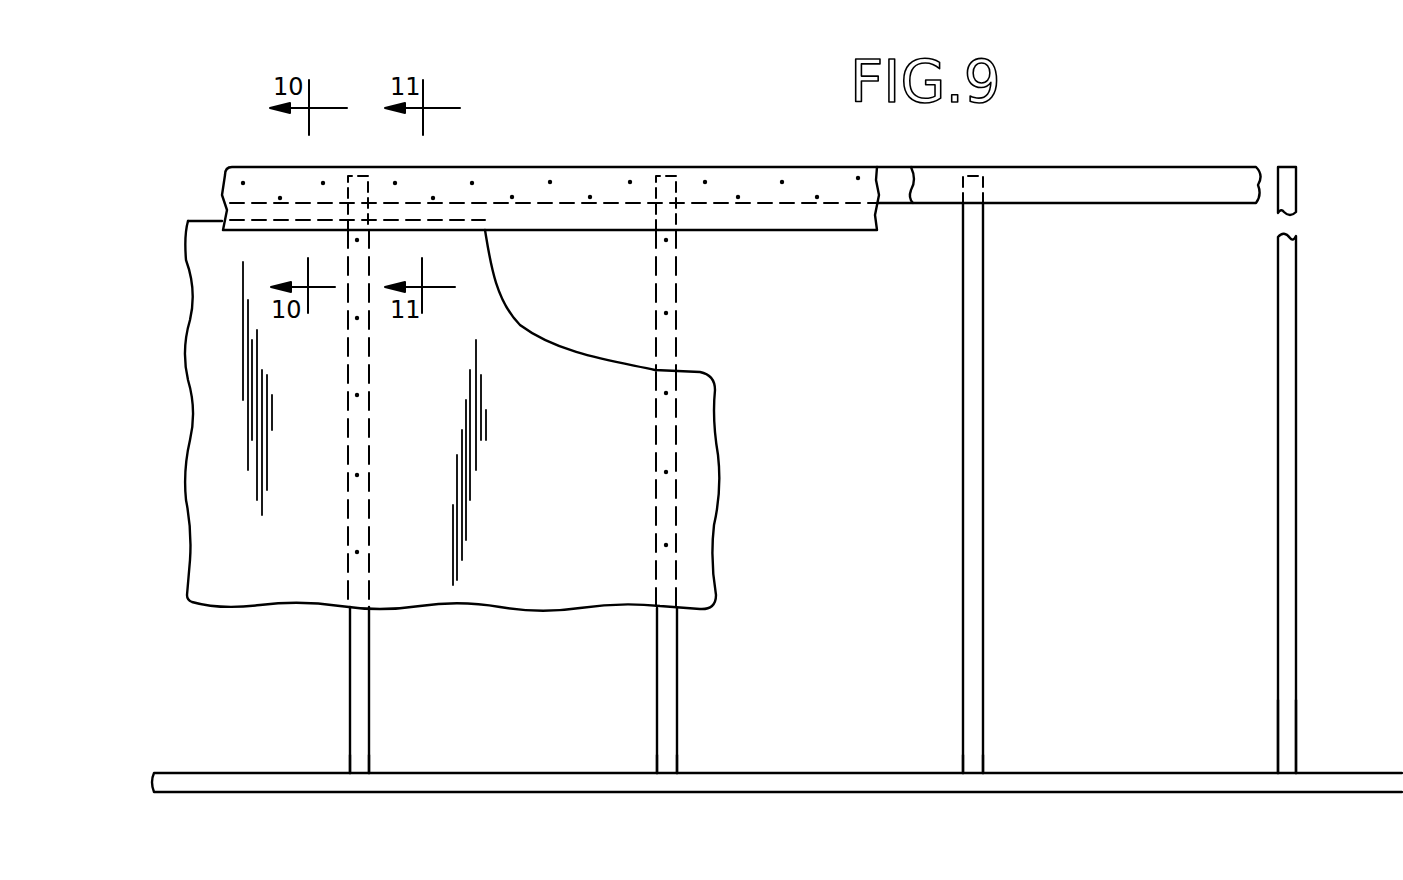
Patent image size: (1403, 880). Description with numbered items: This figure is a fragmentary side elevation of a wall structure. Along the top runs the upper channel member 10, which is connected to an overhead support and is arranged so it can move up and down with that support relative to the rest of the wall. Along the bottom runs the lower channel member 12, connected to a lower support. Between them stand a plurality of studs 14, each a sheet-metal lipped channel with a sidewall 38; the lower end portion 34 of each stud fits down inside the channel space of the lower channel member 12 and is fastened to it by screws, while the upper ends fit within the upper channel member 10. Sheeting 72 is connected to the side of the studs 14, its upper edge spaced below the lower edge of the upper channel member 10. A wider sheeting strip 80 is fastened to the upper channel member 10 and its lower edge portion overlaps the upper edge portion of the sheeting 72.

The upper channel member 10 is at (1147, 196).
The lower channel member 12 is at (835, 772).
The stud 14 is at (355, 663).
The lower end portion 34 is at (360, 767).
The sidewall 38 is at (1298, 733).
The sheeting 72 is at (582, 482).
The sheeting strip 80 is at (592, 230).